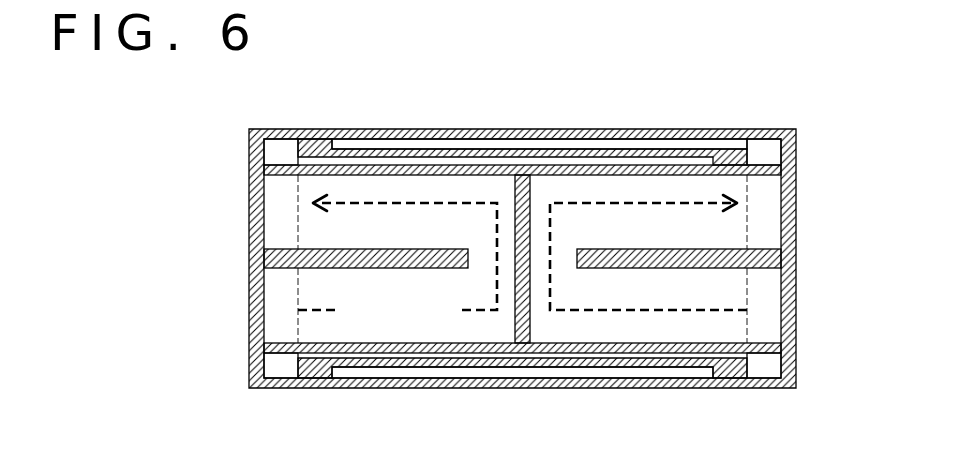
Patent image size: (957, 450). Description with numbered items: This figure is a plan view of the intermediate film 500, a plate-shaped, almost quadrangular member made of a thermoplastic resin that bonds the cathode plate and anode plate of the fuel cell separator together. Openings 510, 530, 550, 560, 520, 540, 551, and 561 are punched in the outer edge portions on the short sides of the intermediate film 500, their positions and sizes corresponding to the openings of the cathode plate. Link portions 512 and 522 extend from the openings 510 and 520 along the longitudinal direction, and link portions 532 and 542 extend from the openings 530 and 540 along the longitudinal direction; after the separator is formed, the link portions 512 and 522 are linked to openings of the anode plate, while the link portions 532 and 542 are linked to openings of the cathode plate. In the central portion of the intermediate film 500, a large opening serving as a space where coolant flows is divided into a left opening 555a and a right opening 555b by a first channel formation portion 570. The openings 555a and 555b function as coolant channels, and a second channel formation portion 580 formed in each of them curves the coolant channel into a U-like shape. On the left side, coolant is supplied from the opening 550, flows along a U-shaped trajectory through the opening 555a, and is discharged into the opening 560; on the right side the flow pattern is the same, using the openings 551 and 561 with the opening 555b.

The intermediate film 500 is at (797, 141).
The opening 510 is at (280, 147).
The link portion 512 is at (700, 160).
The opening 520 is at (765, 370).
The link portion 522 is at (347, 360).
The opening 530 is at (280, 370).
The link portion 532 is at (677, 372).
The opening 540 is at (762, 145).
The link portion 542 is at (355, 143).
The opening 550 is at (275, 297).
The opening 551 is at (768, 297).
The opening 555a is at (440, 195).
The opening 555b is at (637, 195).
The opening 560 is at (275, 212).
The opening 561 is at (768, 212).
The first channel formation portion 570 is at (525, 190).
The second channel formation portion 580 is at (375, 262).